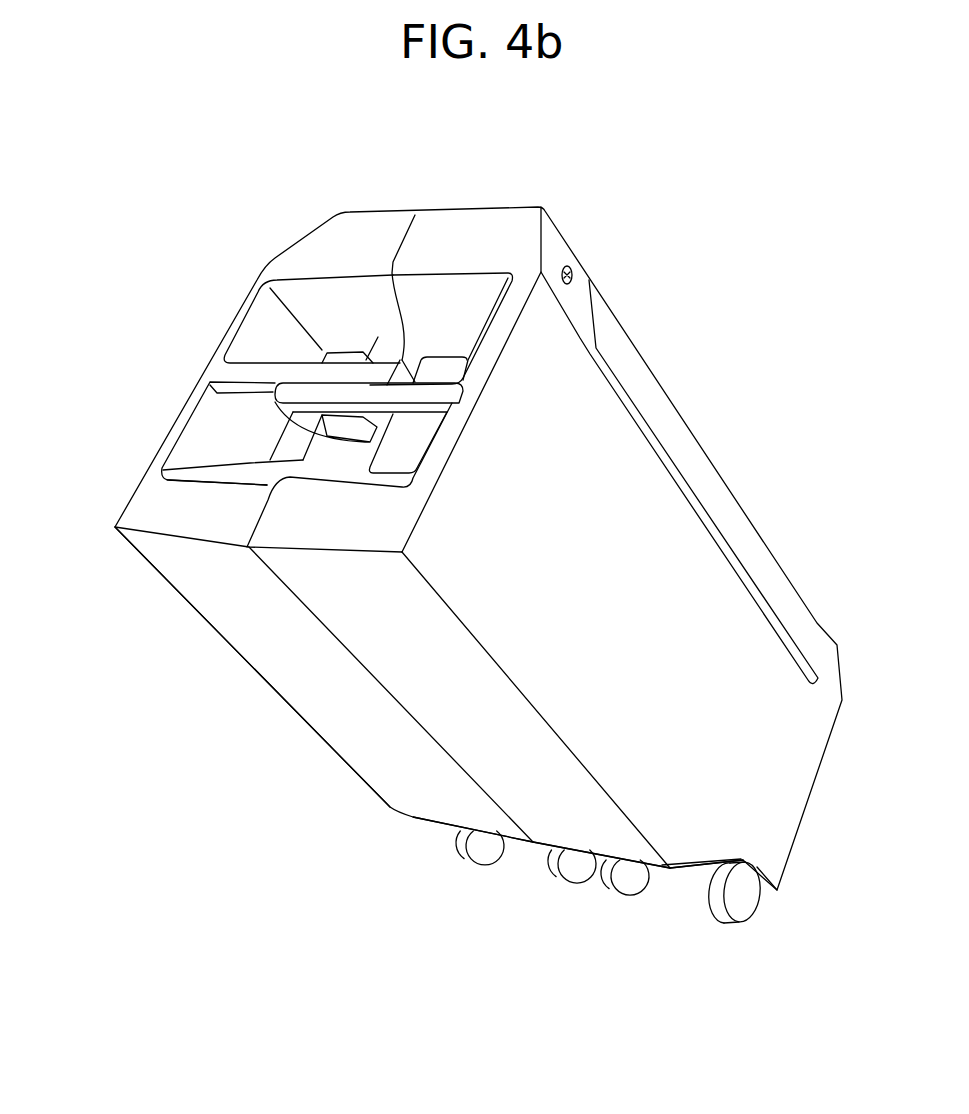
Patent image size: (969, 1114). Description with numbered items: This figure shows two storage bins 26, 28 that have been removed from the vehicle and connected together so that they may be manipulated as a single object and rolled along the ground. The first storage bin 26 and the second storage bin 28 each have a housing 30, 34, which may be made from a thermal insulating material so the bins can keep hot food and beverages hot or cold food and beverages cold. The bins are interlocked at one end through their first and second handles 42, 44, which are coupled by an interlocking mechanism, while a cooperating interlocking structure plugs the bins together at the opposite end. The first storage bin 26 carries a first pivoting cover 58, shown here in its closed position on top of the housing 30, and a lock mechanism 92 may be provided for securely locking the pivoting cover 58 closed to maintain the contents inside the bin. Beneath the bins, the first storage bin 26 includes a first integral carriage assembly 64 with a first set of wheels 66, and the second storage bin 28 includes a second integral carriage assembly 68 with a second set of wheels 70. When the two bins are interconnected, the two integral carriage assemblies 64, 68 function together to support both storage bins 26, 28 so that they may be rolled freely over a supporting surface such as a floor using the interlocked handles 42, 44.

The first storage bin 26 is at (728, 345).
The second storage bin 28 is at (152, 615).
The housing 30 is at (663, 510).
The housing 34 is at (347, 718).
The first handle 42 is at (262, 375).
The second handle 44 is at (312, 392).
The first pivoting cover 58 is at (683, 442).
The first integral carriage assembly 64 is at (648, 932).
The first set of wheels 66 is at (647, 883).
The second integral carriage assembly 68 is at (512, 897).
The second set of wheels 70 is at (557, 867).
The lock mechanism 92 is at (573, 277).